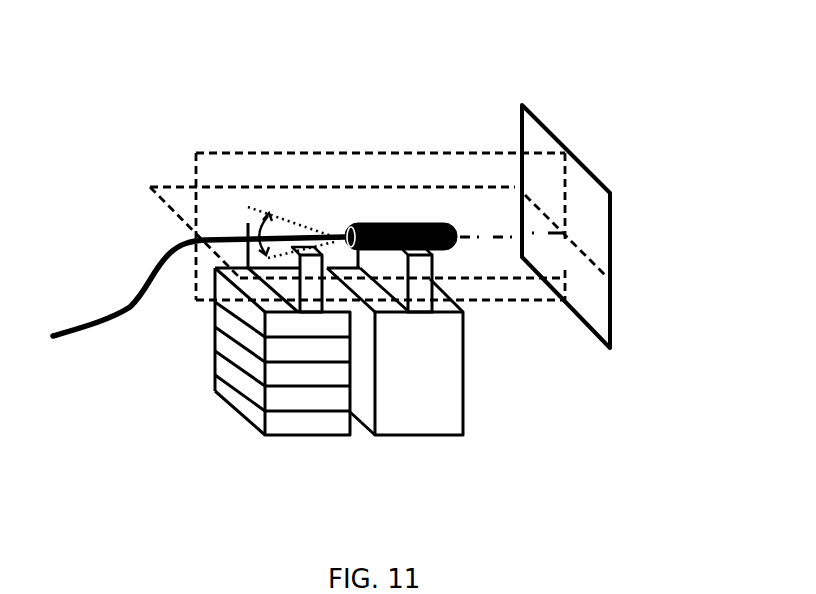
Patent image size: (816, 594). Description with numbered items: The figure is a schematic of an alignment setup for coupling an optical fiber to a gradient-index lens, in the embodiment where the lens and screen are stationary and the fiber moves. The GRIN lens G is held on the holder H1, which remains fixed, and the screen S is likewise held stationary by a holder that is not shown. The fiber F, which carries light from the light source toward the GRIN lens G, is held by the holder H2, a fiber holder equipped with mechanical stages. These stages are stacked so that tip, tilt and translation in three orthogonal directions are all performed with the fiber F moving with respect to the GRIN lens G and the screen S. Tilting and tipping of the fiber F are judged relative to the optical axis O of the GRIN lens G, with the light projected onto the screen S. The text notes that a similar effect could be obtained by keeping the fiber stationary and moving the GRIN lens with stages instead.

The fiber F is at (278, 232).
The GRIN lens G is at (368, 222).
The optical axis O is at (473, 228).
The screen S is at (568, 178).
The holder H1 is at (472, 370).
The holder H2 is at (240, 407).